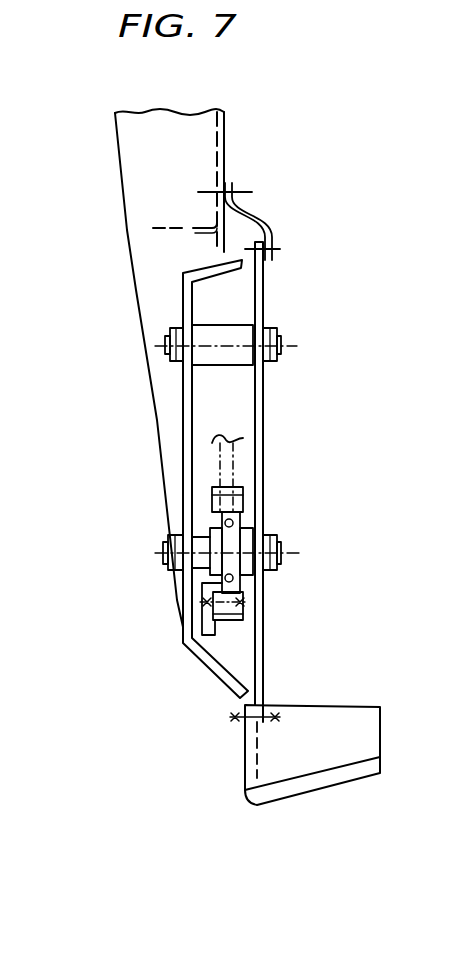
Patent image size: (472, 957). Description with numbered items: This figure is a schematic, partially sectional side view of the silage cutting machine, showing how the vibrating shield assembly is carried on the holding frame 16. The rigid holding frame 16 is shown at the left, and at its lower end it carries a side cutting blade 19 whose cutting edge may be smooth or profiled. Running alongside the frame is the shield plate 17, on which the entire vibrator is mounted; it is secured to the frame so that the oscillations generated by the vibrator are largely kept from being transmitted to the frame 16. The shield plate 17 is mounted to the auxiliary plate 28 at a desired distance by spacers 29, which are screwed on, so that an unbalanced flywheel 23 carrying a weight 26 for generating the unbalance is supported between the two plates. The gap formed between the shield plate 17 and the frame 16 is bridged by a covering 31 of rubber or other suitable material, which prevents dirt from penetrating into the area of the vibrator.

The holding frame 16 is at (148, 247).
The shield plate 17 is at (260, 432).
The side cutting blade 19 is at (297, 728).
The unbalanced flywheel 23 is at (228, 612).
The weight 26 is at (203, 633).
The auxiliary plate 28 is at (187, 393).
The spacer 29 is at (235, 336).
The covering 31 is at (247, 211).